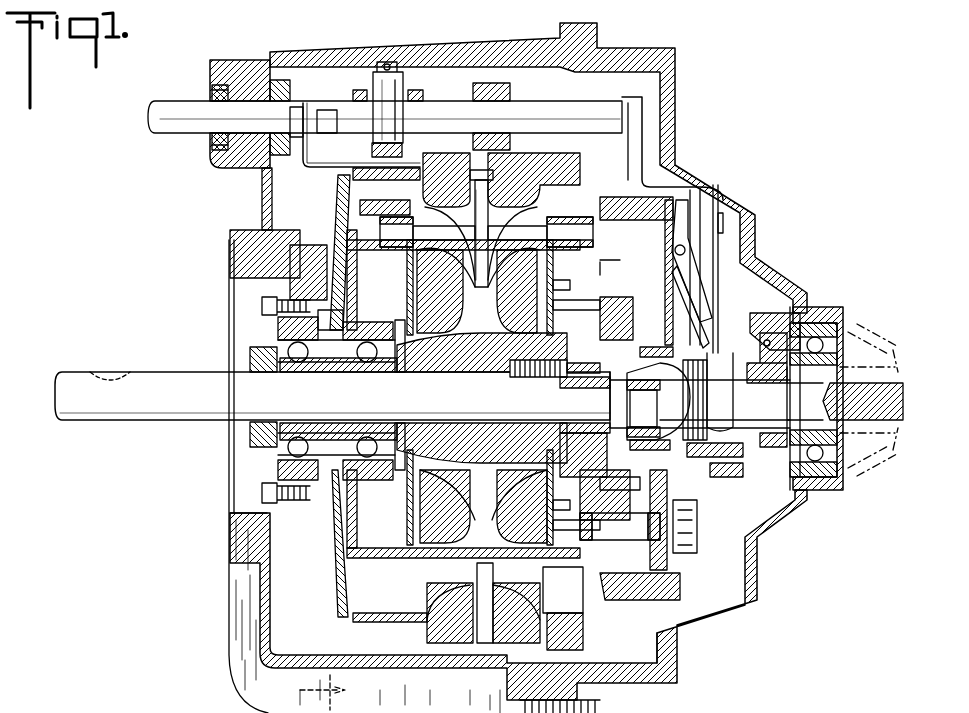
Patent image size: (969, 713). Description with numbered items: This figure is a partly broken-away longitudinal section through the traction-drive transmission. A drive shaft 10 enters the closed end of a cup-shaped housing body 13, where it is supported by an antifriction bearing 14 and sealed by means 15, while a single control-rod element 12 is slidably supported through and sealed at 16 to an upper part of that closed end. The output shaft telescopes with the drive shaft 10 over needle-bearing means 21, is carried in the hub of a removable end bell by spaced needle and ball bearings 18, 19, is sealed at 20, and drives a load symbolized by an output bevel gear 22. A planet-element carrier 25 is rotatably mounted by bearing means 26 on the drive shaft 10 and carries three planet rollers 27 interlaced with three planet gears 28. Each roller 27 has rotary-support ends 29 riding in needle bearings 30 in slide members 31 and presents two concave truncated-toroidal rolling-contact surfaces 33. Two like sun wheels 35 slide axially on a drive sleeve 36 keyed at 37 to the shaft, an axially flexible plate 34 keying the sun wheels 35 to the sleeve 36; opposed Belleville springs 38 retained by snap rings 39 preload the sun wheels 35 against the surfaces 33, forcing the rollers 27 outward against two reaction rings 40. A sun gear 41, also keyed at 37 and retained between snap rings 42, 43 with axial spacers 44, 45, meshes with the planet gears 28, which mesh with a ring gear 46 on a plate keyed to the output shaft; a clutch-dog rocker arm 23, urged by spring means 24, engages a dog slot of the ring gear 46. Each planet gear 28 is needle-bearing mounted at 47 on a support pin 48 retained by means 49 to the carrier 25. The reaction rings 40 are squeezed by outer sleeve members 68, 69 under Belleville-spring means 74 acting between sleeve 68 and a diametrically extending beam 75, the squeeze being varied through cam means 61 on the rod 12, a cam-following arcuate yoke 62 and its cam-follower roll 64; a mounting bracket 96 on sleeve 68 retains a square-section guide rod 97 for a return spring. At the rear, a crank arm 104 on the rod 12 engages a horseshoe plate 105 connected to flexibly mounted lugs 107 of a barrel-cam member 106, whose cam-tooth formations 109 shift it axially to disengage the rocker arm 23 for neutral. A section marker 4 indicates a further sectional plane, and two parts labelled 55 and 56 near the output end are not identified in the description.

The section line 4- 4 is at (329, 692).
The drive shaft 10 is at (143, 372).
The control-rod element 12 is at (172, 101).
The housing body 13 is at (410, 58).
The antifriction bearing 14 is at (262, 470).
The sealing means 15 is at (258, 430).
The seal 16 is at (212, 140).
The needle bearing 18 is at (680, 390).
The ball bearing 19 is at (816, 335).
The seal 20 is at (795, 330).
The needle-bearing means 21 is at (560, 378).
The output bevel gear 22 is at (890, 330).
The clutch-dog rocker arm 23 is at (678, 222).
The spring means 24 is at (677, 297).
The planet-element carrier 25 is at (378, 568).
The bearing means 26 is at (378, 437).
The planet roller 27 is at (520, 240).
The planet gear 28 is at (660, 515).
The rotary-support ends 29 is at (420, 240).
The needle bearings 30 is at (603, 197).
The slide members 31 is at (440, 210).
The rolling-contact surface 33 is at (462, 195).
The plate 34 is at (410, 300).
The sun wheel 35 is at (460, 320).
The drive sleeve 36 is at (470, 372).
The key 37 is at (535, 378).
The Belleville springs 38 is at (575, 290).
The snap rings 39 is at (560, 312).
The reaction ring 40 is at (483, 603).
The sun gear 41 is at (640, 340).
The snap ring 42 is at (612, 380).
The snap ring 43 is at (278, 372).
The axial spacer 44 is at (325, 372).
The axial spacer 45 is at (395, 372).
The ring gear 46 is at (640, 195).
The needle bearing 47 is at (605, 595).
The support pin 48 is at (697, 522).
The retaining means 49 is at (555, 565).
The ring 55 is at (600, 465).
The shaft 56 is at (660, 470).
The cam means 61 is at (360, 90).
The cam-following arcuate yoke 62 is at (372, 148).
The cam-follower roll 64 is at (400, 85).
The outer sleeve member 68 is at (368, 622).
The outer sleeve member 69 is at (603, 643).
The Belleville-spring means 74 is at (332, 219).
The beam 75 is at (283, 232).
The mounting bracket 96 is at (330, 168).
The guide rod 97 is at (325, 110).
The crank arm 104 is at (685, 218).
The horseshoe plate 105 is at (717, 262).
The barrel-cam member 106 is at (722, 327).
The lugs 107 is at (735, 415).
The cam-tooth formations 109 is at (750, 372).